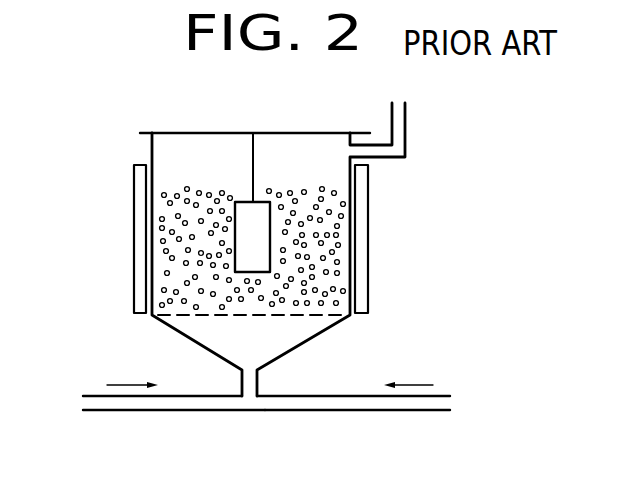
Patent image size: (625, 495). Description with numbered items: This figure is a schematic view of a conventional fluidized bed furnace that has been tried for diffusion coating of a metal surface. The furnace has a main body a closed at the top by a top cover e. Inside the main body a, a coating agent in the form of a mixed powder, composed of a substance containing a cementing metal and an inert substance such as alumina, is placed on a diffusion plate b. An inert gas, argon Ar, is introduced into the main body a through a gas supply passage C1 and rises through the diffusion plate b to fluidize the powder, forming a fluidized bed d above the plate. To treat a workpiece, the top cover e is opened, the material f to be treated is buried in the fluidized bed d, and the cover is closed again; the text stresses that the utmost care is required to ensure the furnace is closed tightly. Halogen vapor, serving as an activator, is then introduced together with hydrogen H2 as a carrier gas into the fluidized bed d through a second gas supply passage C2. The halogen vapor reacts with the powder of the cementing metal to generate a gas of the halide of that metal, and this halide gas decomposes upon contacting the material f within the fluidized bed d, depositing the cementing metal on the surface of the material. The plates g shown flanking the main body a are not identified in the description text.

The top cover e is at (225, 133).
The main body a is at (153, 233).
The heater plates g is at (142, 200).
The material to be treated f is at (262, 262).
The fluidized bed d is at (340, 227).
The diffusion plate b is at (302, 315).
The gas supply passage C2 is at (207, 402).
The gas supply passage C1 is at (325, 400).
The hydrogen H2 is at (49, 405).
The argon Ar is at (473, 405).